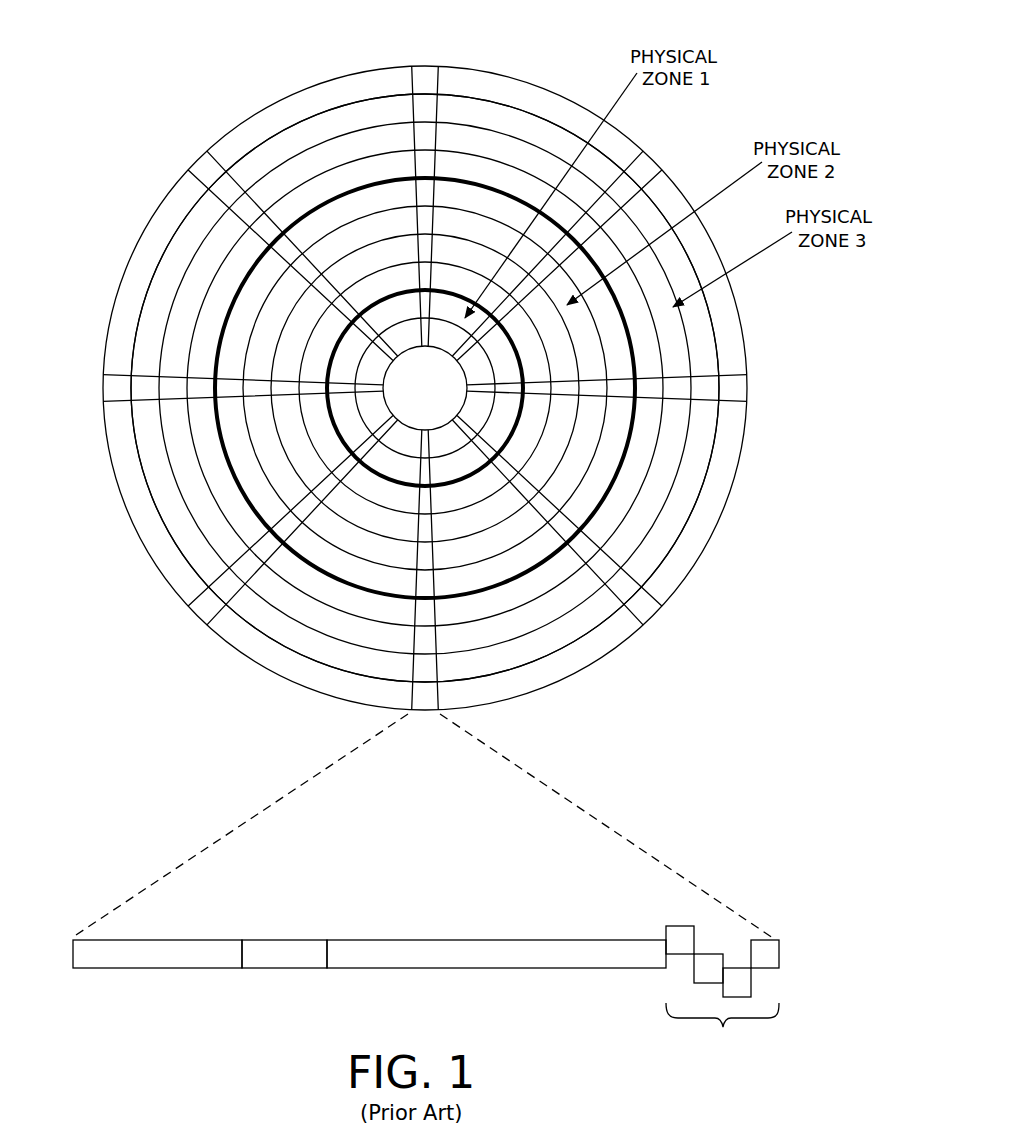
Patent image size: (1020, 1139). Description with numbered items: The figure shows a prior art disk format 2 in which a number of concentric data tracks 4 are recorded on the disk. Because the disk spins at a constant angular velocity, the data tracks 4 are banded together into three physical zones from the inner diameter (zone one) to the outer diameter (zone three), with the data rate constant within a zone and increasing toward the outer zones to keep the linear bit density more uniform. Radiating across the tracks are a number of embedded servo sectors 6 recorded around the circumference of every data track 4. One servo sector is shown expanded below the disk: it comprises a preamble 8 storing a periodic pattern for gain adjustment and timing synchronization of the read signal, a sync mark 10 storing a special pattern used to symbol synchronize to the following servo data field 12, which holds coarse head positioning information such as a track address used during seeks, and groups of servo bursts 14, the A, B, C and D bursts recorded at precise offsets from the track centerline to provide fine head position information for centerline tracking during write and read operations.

The disk format 2 is at (178, 66).
The data tracks 4 is at (537, 132).
The servo sectors 6 is at (428, 399).
The preamble 8 is at (138, 968).
The sync mark 10 is at (280, 968).
The servo data field 12 is at (485, 968).
The servo bursts 14 is at (655, 908).